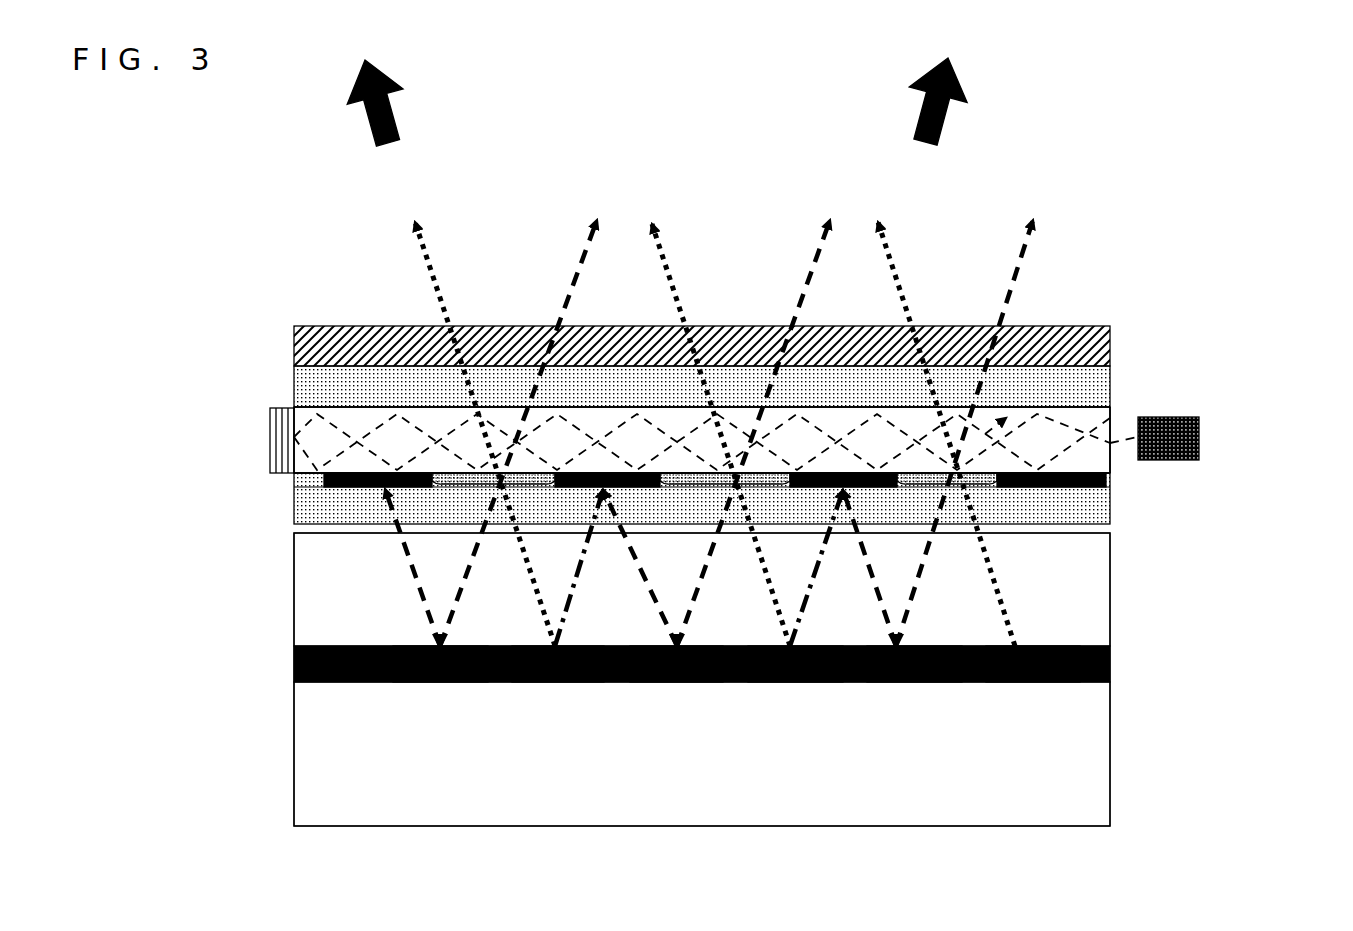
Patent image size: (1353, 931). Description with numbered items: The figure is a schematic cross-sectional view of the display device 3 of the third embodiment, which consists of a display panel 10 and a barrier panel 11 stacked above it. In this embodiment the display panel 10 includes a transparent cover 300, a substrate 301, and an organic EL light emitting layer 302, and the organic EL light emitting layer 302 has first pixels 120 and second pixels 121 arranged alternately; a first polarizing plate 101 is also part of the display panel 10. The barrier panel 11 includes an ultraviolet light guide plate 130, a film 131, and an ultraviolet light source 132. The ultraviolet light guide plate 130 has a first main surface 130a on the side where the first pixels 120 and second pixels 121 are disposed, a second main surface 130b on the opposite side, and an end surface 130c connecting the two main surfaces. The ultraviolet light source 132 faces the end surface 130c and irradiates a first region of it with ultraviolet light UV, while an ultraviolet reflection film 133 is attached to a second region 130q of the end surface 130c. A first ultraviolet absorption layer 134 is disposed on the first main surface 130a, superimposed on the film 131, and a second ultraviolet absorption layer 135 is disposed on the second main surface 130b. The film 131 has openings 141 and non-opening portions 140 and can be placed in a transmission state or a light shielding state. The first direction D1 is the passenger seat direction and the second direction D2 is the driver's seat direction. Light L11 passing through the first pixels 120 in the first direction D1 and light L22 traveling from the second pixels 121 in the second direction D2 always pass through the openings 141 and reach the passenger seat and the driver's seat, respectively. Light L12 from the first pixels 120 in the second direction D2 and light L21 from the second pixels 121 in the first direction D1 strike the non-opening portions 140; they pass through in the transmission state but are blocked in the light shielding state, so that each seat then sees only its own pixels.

The display device 3 is at (1157, 276).
The display panel 10 is at (150, 585).
The barrier panel 11 is at (1119, 371).
The first polarizing plate 101 is at (294, 348).
The first pixels 120 is at (440, 684).
The second pixels 121 is at (556, 684).
The ultraviolet light guide plate 130 is at (1113, 462).
The first main surface 130a is at (437, 474).
The second main surface 130b is at (500, 407).
The end surface 130c is at (1112, 420).
The second region 130q is at (293, 427).
The film 131 is at (1113, 488).
The ultraviolet light source 132 is at (1200, 438).
The ultraviolet reflection film 133 is at (270, 413).
The first ultraviolet absorption layer 134 is at (1113, 524).
The second ultraviolet absorption layer 135 is at (1113, 392).
The non-opening portions 140 is at (366, 486).
The openings 141 is at (555, 486).
The transparent cover 300 is at (294, 615).
The substrate 301 is at (294, 740).
The organic EL light emitting layer 302 is at (294, 662).
The first direction D1 is at (937, 105).
The second direction D2 is at (385, 101).
The light L11 is at (574, 272).
The light L12 is at (413, 580).
The light L21 is at (572, 605).
The light L22 is at (463, 256).
The ultraviolet light UV is at (984, 433).